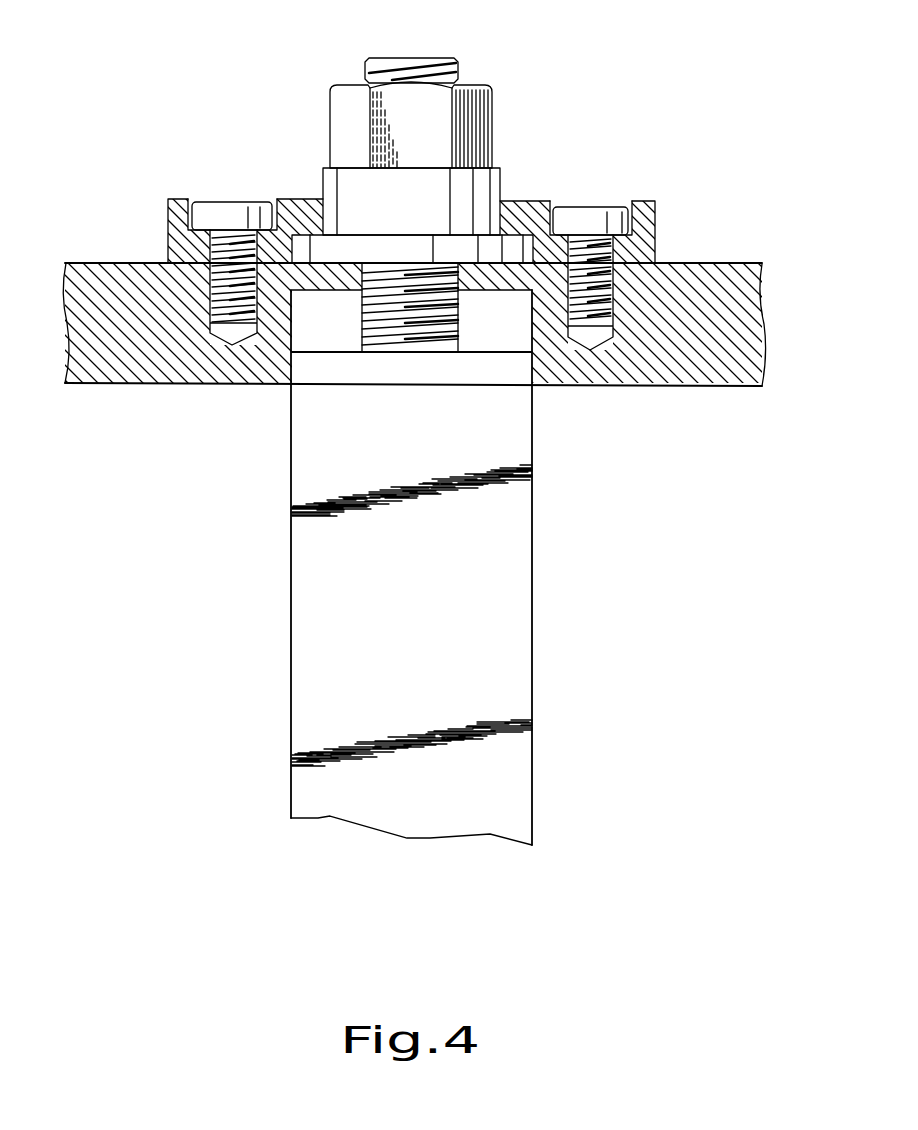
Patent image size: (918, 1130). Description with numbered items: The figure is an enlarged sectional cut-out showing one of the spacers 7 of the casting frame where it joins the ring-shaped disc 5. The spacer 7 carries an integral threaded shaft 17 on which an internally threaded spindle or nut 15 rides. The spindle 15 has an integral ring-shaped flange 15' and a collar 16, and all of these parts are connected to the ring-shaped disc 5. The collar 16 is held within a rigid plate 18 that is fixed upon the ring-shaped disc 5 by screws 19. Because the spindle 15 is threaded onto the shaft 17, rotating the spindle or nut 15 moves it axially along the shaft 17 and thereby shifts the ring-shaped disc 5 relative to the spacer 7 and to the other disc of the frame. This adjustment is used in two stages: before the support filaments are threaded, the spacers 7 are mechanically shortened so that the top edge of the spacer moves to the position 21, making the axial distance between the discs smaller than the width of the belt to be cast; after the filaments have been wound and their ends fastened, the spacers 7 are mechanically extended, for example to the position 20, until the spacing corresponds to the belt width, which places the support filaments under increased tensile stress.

The ring-shaped disc 5 is at (118, 355).
The spacer 7 is at (308, 625).
The spindle 15 is at (378, 124).
The ring-spaced flange 15' is at (444, 160).
The collar 16 is at (508, 248).
The threaded shaft 17 is at (375, 72).
The rigid plate 18 is at (178, 227).
The screws 19 is at (226, 212).
The extended position 20 is at (489, 362).
The shortened position 21 is at (338, 306).